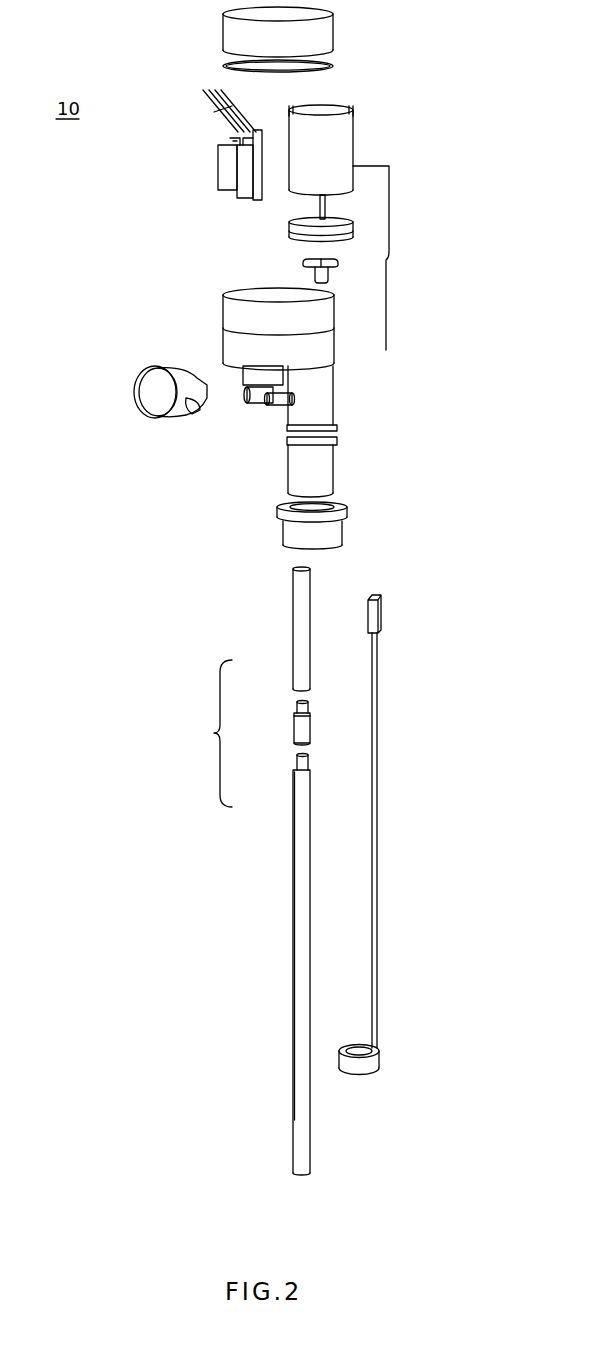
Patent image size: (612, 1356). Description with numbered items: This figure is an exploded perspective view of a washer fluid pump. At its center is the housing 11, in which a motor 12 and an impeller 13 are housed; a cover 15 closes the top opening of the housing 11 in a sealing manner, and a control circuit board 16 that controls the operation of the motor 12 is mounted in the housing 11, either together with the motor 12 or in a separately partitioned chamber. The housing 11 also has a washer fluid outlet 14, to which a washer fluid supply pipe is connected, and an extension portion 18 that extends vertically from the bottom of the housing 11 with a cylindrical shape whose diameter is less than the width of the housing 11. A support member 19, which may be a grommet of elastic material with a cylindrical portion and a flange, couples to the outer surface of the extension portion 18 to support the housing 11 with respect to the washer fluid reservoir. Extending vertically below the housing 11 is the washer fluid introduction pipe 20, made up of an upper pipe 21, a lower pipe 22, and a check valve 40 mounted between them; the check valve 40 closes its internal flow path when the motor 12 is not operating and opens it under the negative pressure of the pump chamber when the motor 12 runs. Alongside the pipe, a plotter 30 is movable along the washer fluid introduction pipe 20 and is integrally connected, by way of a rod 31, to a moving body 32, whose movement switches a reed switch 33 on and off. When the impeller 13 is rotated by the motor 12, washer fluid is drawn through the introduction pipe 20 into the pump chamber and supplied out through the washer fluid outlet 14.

The housing 11 is at (242, 347).
The motor 12 is at (345, 137).
The impeller 13 is at (303, 265).
The washer fluid outlet 14 is at (142, 392).
The cover 15 is at (323, 30).
The control circuit board 16 is at (228, 170).
The extension portion 18 is at (298, 467).
The support member 19 is at (295, 534).
The washer fluid introduction pipe 20 is at (210, 733).
The upper pipe 21 is at (298, 660).
The lower pipe 22 is at (298, 803).
The plotter 30 is at (373, 1060).
The rod 31 is at (378, 805).
The moving body 32 is at (380, 613).
The reed switch 33 is at (386, 347).
The check valve 40 is at (322, 729).